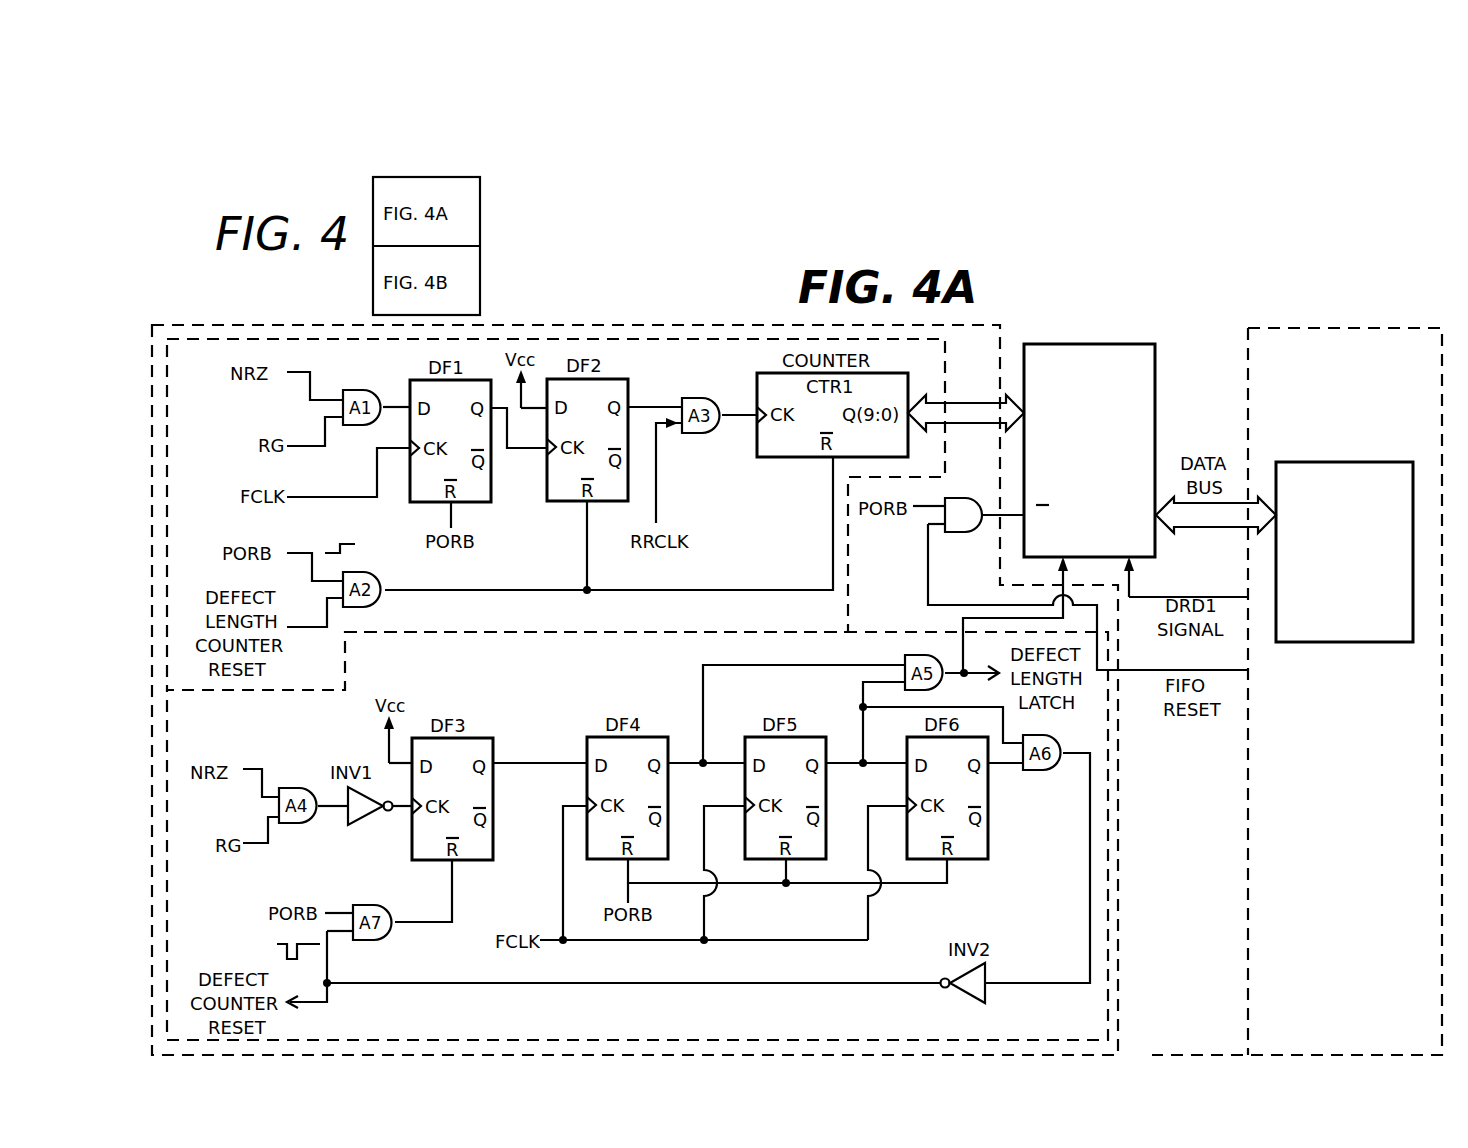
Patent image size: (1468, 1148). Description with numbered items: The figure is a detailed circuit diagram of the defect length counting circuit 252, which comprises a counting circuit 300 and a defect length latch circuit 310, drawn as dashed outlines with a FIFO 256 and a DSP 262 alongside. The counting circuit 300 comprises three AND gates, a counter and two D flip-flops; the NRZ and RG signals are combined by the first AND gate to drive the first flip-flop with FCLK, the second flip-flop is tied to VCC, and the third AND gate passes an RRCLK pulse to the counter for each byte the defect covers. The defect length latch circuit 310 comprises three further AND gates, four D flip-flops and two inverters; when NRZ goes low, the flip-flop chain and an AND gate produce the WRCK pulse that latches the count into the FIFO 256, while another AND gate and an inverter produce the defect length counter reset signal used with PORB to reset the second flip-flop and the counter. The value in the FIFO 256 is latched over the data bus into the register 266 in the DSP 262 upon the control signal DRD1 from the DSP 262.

The counting circuit 300 is at (598, 338).
The defect length counting circuit 252 is at (668, 325).
The FIFO 256 is at (1118, 344).
The DSP 262 is at (1358, 404).
The register 266 is at (1332, 462).
The defect length latch circuit 310 is at (1110, 912).